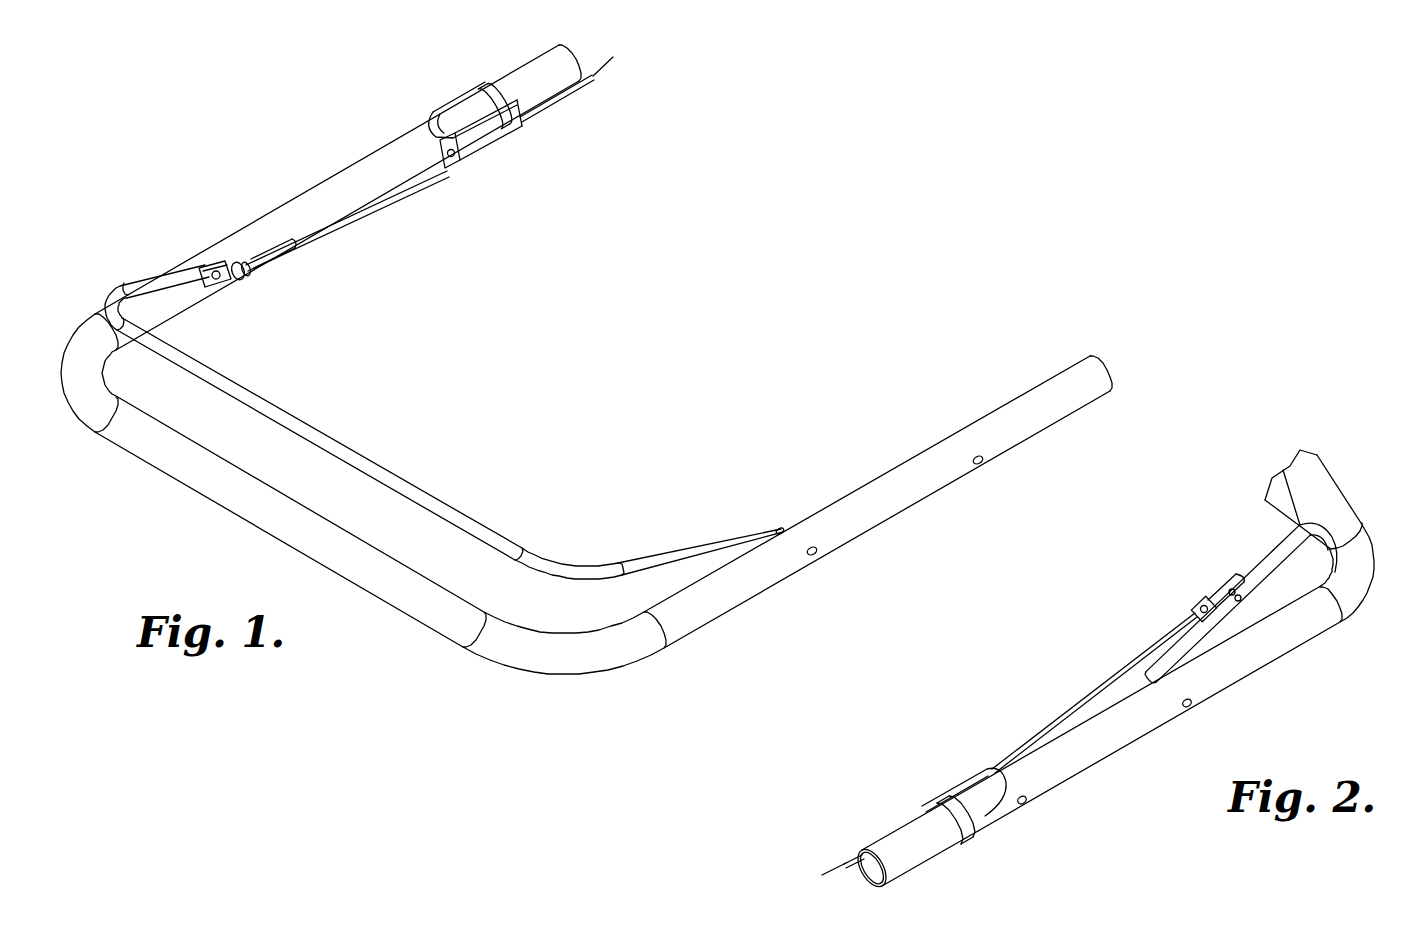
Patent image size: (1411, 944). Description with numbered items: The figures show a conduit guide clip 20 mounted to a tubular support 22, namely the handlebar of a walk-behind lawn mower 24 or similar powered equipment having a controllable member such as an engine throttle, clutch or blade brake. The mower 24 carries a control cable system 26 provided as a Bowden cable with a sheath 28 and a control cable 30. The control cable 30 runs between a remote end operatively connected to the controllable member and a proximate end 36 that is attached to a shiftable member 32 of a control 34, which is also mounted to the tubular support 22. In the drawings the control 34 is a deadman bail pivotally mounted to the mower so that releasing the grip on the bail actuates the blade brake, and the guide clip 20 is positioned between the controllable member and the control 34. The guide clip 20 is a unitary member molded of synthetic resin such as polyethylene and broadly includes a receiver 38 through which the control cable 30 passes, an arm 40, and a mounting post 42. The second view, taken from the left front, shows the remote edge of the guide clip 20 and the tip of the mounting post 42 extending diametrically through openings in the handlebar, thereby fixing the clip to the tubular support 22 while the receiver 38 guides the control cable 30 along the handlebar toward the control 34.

In FIG. 1, the conduit guide clip 20 is at (444, 110).
In FIG. 2, the conduit guide clip 20 is at (970, 785).
In FIG. 1, the tubular support 22 is at (318, 180).
In FIG. 2, the tubular support 22 is at (921, 878).
In FIG. 1, the lawn mower 24 is at (490, 690).
In FIG. 2, the lawn mower 24 is at (1107, 789).
In FIG. 1, the control cable system 26 is at (385, 210).
In FIG. 2, the control cable system 26 is at (830, 857).
In FIG. 1, the sheath 28 is at (582, 92).
In FIG. 2, the sheath 28 is at (864, 848).
In FIG. 1, the control cable 30 is at (308, 242).
In FIG. 2, the control cable 30 is at (1128, 667).
In FIG. 1, the shiftable member 32 is at (219, 368).
In FIG. 2, the shiftable member 32 is at (1273, 542).
In FIG. 1, the control 34 is at (122, 272).
In FIG. 2, the control 34 is at (1322, 450).
In FIG. 2, the proximate end 36 is at (1199, 600).
In FIG. 1, the receiver 38 is at (488, 150).
In FIG. 2, the receiver 38 is at (922, 803).
In FIG. 1, the arm 40 is at (444, 106).
In FIG. 2, the arm 40 is at (980, 818).
In FIG. 1, the mounting post 42 is at (432, 128).
In FIG. 2, the mounting post 42 is at (1028, 806).